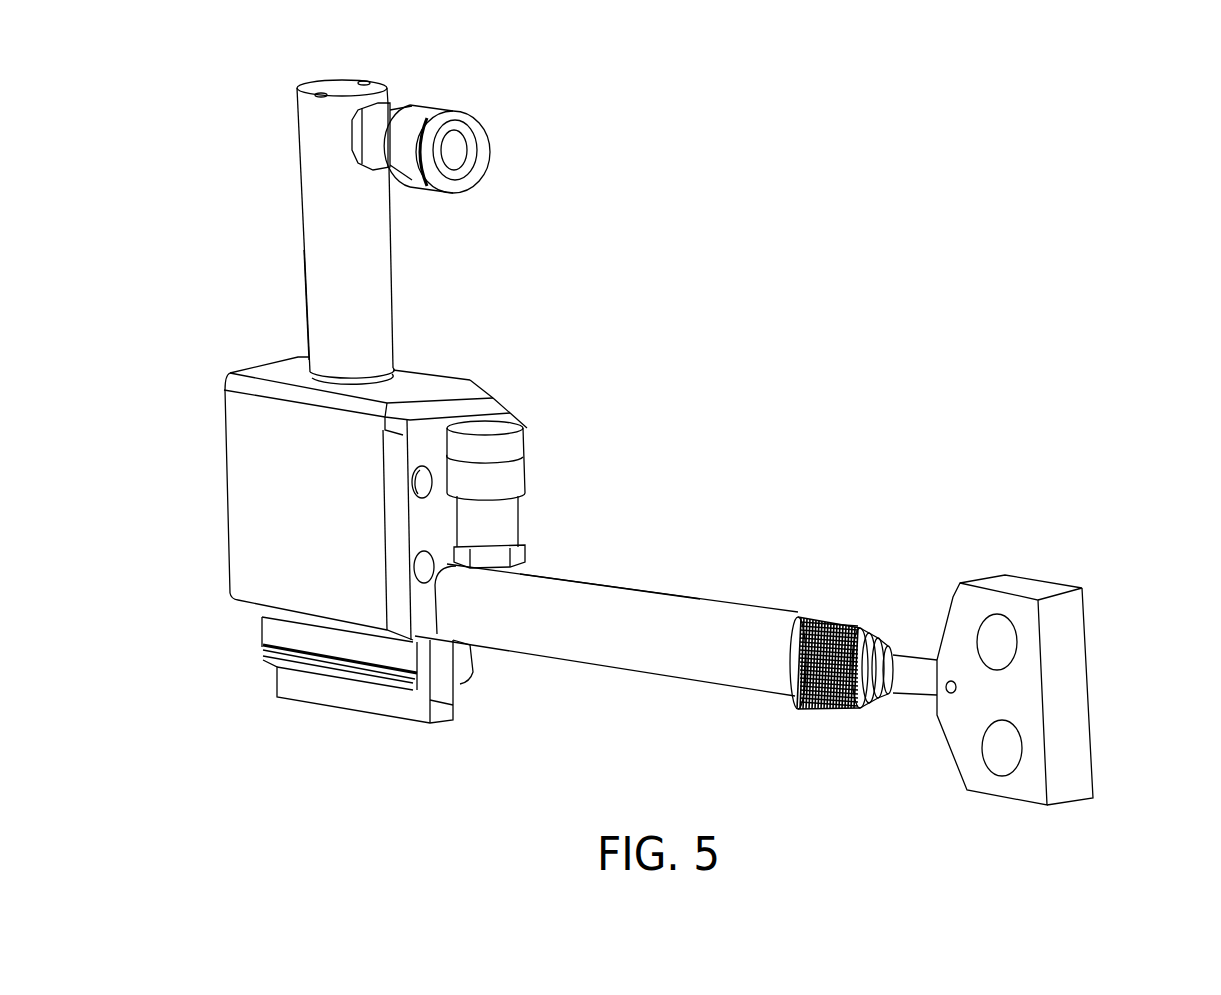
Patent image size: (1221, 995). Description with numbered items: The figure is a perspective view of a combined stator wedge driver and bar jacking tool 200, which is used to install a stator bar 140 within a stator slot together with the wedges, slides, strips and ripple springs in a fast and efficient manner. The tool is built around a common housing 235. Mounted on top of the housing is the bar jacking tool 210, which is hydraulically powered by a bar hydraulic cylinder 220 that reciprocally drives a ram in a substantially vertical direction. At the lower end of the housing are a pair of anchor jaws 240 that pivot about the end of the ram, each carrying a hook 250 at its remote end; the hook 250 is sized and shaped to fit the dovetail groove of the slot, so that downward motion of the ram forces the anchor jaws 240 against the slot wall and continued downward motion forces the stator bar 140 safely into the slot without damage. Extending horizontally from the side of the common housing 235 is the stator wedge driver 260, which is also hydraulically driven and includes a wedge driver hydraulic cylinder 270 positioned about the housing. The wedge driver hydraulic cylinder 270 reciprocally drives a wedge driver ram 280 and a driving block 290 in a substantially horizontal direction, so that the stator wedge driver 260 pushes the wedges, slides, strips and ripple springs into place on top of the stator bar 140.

The combined stator wedge driver and bar jacking tool 200 is at (1047, 58).
The bar jacking tool 210 is at (286, 242).
The bar hydraulic cylinder 220 is at (305, 326).
The common housing 235 is at (236, 483).
The anchor jaws 240 is at (263, 632).
The hook 250 is at (263, 663).
The stator bar 140 is at (453, 720).
The stator wedge driver 260 is at (708, 580).
The wedge driver hydraulic cylinder 270 is at (583, 575).
The wedge driver ram 280 is at (925, 657).
The driving block 290 is at (1085, 633).